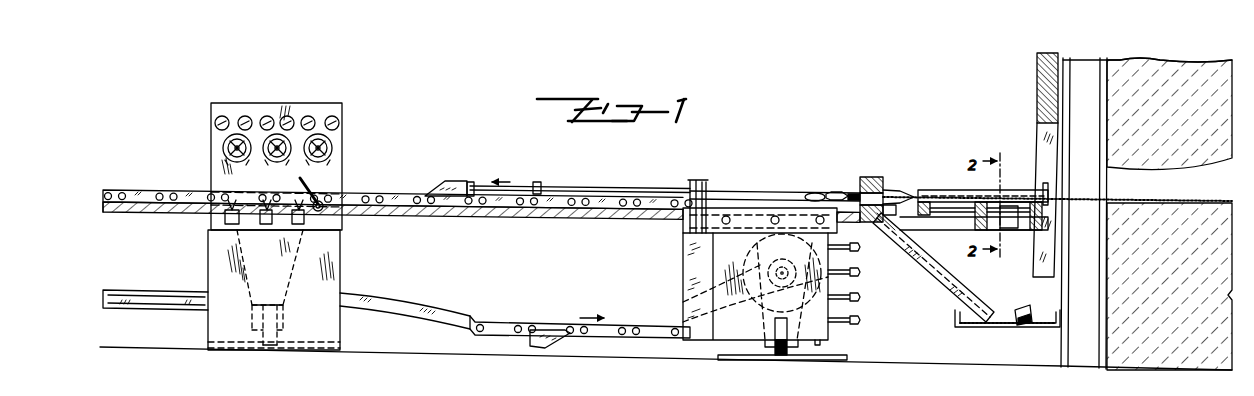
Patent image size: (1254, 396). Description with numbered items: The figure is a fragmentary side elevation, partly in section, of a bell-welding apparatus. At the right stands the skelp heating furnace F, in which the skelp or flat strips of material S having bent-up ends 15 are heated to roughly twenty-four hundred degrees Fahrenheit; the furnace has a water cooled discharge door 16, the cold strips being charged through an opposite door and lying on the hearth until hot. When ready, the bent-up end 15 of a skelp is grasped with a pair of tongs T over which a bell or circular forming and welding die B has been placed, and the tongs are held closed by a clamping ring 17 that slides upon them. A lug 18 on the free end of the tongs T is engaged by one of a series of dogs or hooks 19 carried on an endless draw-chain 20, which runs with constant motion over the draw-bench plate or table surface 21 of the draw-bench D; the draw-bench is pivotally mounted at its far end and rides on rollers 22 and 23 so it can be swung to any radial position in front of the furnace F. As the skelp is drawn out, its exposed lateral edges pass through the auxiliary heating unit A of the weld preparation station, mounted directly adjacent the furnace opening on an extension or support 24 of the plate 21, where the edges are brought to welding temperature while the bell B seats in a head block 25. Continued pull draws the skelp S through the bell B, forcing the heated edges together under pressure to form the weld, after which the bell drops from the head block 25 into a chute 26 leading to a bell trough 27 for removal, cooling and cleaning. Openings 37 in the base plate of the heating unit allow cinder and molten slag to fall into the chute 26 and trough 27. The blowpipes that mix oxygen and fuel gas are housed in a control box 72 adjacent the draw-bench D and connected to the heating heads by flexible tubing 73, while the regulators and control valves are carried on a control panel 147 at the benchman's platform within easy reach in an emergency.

The bent-up ends 15 is at (821, 191).
The water cooled discharge door 16 is at (1037, 96).
The clamping ring 17 is at (538, 183).
The lug 18 is at (471, 182).
The dogs or hooks 19 is at (461, 182).
The endless draw-chain 20 is at (611, 334).
The draw-bench plate or table surface 21 is at (512, 214).
The roller 22 is at (283, 346).
The roller 23 is at (788, 356).
The extension or support 24 is at (975, 224).
The head block 25 is at (869, 177).
The chute 26 is at (941, 291).
The bell trough 27 is at (1005, 327).
The openings 37 is at (1012, 216).
The control box 72 is at (828, 332).
The flexible tubing 73 is at (860, 320).
The control panel 147 is at (341, 276).
The auxiliary heating unit A is at (948, 189).
The bell or circular forming and welding die B is at (889, 192).
The draw-bench D is at (382, 190).
The skelp heating furnace F is at (1146, 62).
The skelp or flat strips of material S is at (1138, 200).
The tongs T is at (811, 192).